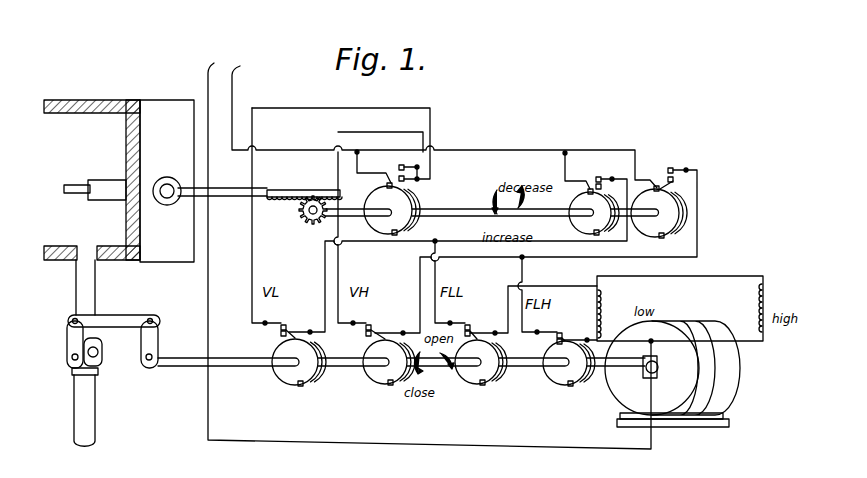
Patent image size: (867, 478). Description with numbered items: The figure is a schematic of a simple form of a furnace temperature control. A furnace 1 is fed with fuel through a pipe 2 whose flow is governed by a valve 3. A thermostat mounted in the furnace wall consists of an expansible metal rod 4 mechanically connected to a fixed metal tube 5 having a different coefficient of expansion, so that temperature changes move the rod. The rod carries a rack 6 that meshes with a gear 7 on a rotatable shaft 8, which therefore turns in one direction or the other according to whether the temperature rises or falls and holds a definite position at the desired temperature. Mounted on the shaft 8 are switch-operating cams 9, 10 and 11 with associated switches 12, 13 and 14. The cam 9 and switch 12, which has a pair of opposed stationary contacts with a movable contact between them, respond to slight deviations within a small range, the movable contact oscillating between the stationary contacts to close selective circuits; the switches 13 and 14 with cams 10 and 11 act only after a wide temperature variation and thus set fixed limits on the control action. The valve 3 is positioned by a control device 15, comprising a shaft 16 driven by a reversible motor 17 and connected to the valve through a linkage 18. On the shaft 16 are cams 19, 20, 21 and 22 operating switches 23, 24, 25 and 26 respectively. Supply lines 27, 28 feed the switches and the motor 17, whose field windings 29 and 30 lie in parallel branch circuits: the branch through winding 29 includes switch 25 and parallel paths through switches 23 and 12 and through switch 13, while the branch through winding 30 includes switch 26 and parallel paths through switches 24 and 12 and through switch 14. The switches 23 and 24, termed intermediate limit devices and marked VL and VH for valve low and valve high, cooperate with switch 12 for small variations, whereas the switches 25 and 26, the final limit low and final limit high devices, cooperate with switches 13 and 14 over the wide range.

The furnace 1 is at (99, 100).
The pipe 2 is at (97, 398).
The valve 3 is at (103, 355).
The expansible metal rod 4 is at (78, 184).
The fixed metal tube 5 is at (110, 196).
The rack 6 is at (270, 191).
The gear 7 is at (305, 220).
The rotatable shaft 8 is at (470, 208).
The switch-operating cam 9 is at (403, 224).
The switch-operating cam 10 is at (578, 228).
The switch-operating cam 11 is at (655, 236).
The switch 12 is at (405, 181).
The switch 13 is at (594, 176).
The switch 14 is at (672, 176).
The control device 15 is at (526, 375).
The shaft 16 is at (350, 368).
The reversible motor 17 is at (722, 369).
The linkage 18 is at (123, 319).
The cam 19 is at (290, 381).
The cam 20 is at (392, 382).
The cam 21 is at (478, 382).
The cam 22 is at (568, 383).
The switch 23 is at (290, 326).
The switch 24 is at (380, 328).
The switch 25 is at (470, 328).
The switch 26 is at (564, 336).
The supply line 27 is at (429, 249).
The supply line 28 is at (444, 122).
The field winding 29 is at (612, 302).
The field winding 30 is at (766, 296).